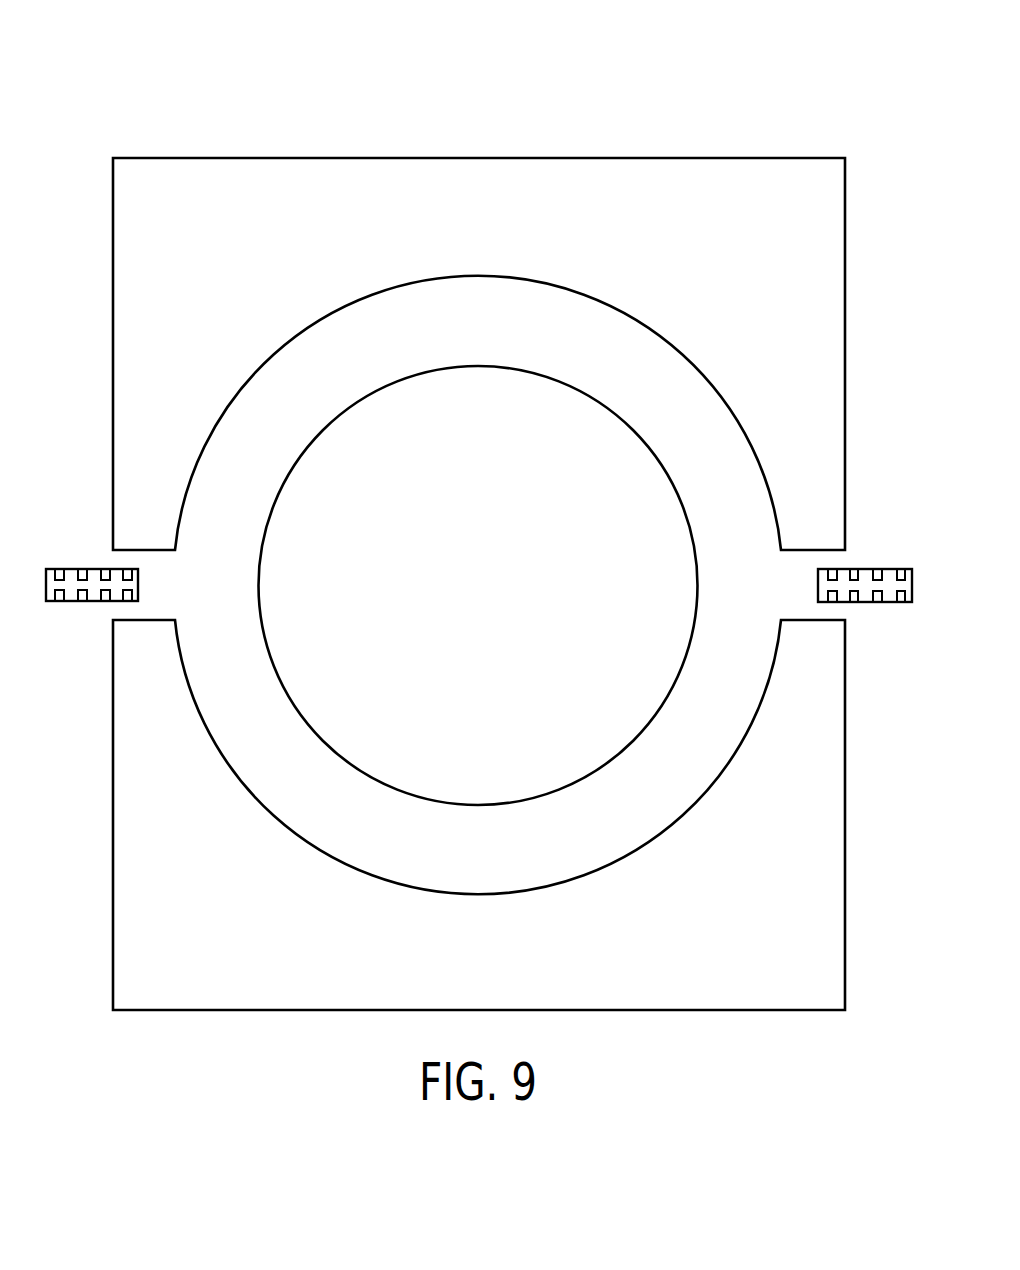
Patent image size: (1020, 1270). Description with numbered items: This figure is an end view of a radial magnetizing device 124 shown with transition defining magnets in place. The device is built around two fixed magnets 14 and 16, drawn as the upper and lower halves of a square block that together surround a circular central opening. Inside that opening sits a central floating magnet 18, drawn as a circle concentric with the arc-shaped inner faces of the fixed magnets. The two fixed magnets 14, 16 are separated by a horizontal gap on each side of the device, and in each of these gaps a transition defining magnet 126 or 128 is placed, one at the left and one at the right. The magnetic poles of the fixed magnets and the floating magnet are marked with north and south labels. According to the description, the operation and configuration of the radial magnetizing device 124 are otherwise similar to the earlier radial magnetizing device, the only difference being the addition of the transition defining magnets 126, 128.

The fixed magnet 14 is at (846, 357).
The fixed magnet 16 is at (846, 780).
The central floating magnet 18 is at (494, 591).
The radial magnetizing device 124 is at (479, 511).
The transition defining magnet 126 is at (74, 601).
The transition defining magnet 128 is at (880, 602).